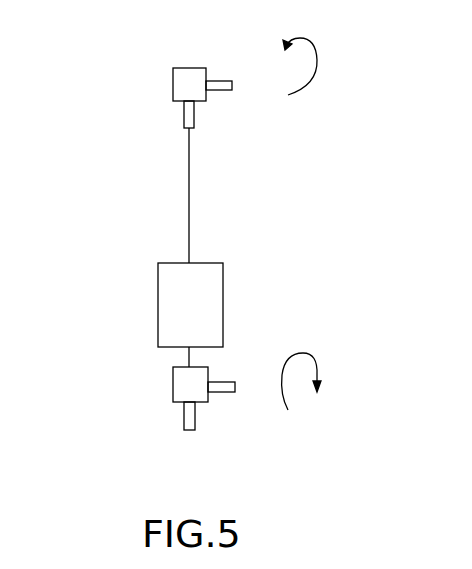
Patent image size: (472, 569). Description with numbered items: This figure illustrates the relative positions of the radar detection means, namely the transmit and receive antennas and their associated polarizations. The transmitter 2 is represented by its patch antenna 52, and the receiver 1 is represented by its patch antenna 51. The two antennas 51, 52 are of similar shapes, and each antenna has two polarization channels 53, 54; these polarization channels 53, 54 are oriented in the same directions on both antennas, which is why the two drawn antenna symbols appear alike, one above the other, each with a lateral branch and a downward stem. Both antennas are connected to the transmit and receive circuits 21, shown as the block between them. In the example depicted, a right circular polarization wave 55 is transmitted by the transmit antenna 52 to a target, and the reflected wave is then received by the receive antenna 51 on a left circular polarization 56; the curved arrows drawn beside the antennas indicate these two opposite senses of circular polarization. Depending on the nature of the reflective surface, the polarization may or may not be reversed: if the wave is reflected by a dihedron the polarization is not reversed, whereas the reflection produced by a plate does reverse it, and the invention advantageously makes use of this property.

The receiver 1 is at (125, 80).
The transmitter 2 is at (127, 408).
The transmit and receive circuits 21 is at (213, 302).
The patch antenna 51 is at (192, 77).
The patch antenna 52 is at (180, 392).
The polarization channel 53 is at (218, 92).
The polarization channel 54 is at (183, 118).
The right circular polarization wave 55 is at (315, 355).
The left circular polarization 56 is at (318, 57).